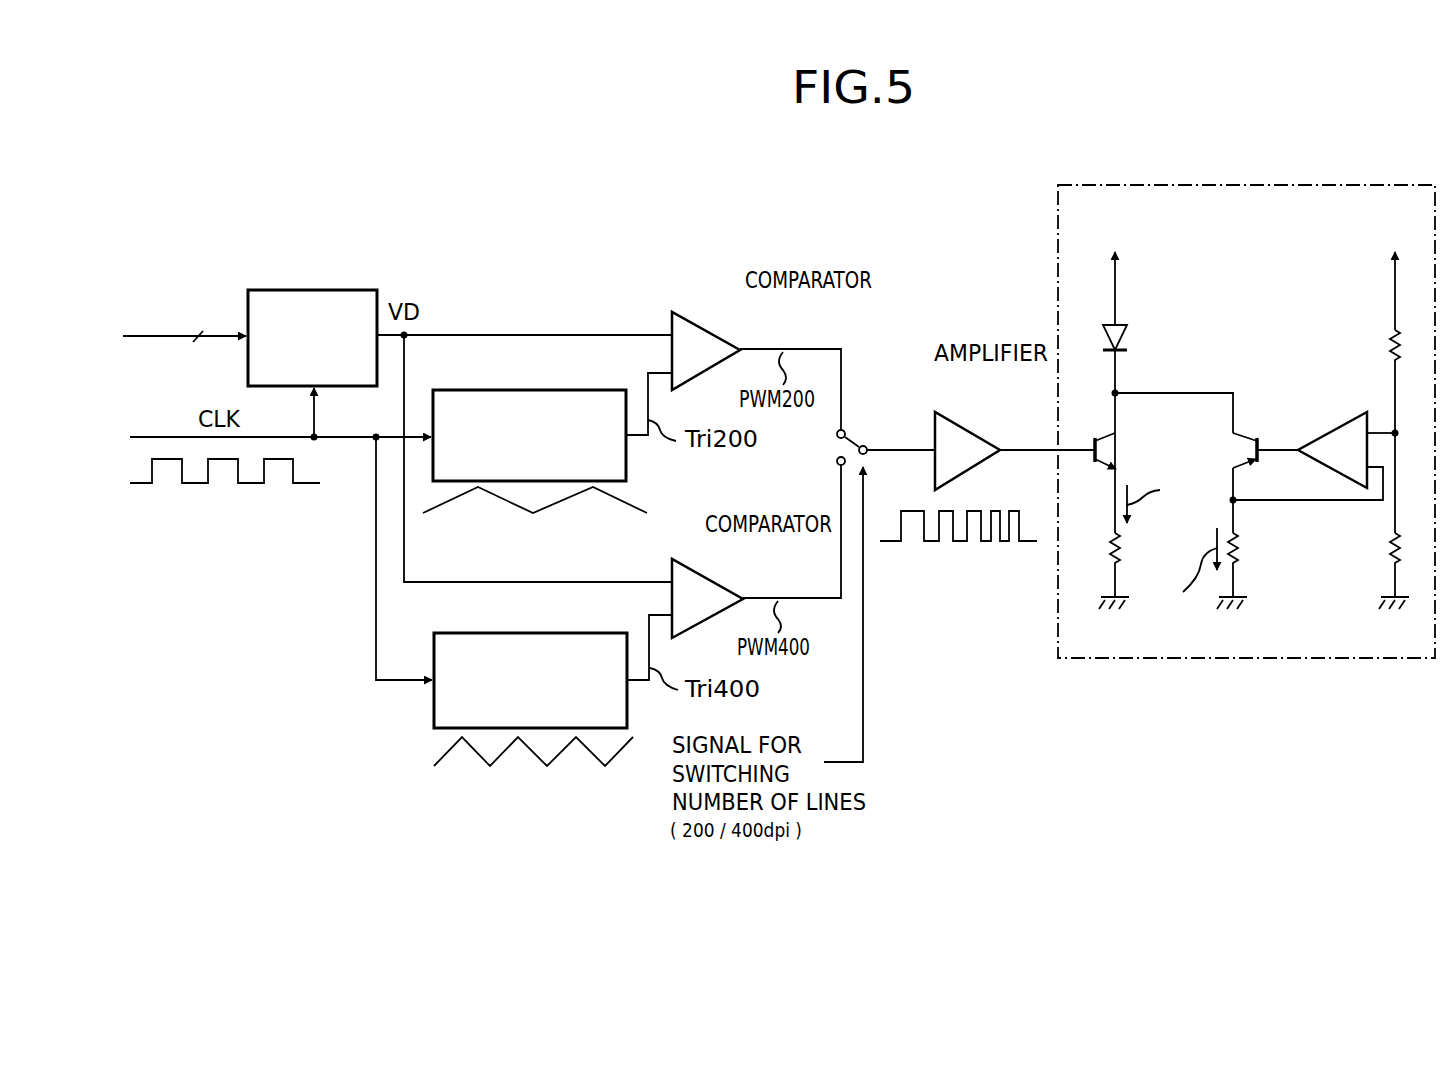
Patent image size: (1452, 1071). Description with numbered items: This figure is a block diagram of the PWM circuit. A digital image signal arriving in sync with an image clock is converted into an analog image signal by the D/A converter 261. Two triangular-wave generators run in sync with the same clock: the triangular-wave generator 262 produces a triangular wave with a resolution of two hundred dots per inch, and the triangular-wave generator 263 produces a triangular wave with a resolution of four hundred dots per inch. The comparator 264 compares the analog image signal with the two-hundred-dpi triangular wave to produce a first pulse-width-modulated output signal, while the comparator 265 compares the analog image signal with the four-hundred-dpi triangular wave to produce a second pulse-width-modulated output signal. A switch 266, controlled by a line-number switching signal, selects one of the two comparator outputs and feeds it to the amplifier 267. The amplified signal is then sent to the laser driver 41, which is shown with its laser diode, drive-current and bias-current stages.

The D/A converter 261 is at (310, 290).
The triangular-wave generator 262 is at (508, 390).
The triangular-wave generator 263 is at (516, 633).
The comparator 264 is at (704, 323).
The comparator 265 is at (690, 558).
The switch 266 is at (855, 440).
The amplifier 267 is at (968, 420).
The laser driver 41 is at (1277, 660).